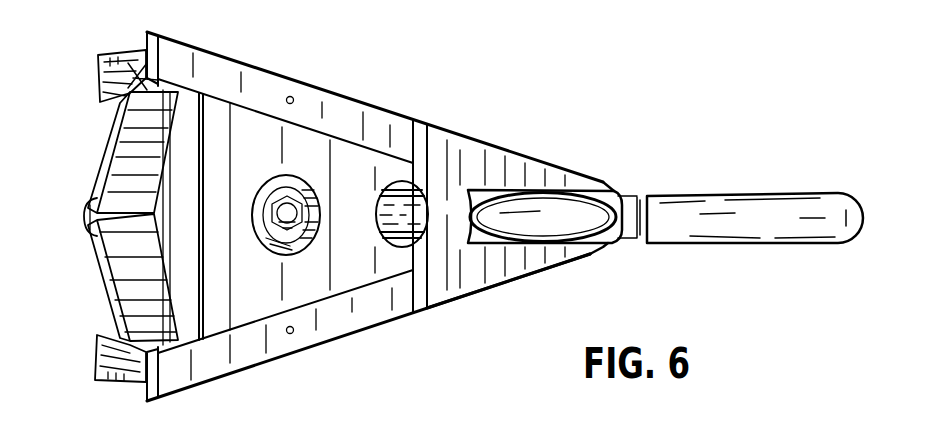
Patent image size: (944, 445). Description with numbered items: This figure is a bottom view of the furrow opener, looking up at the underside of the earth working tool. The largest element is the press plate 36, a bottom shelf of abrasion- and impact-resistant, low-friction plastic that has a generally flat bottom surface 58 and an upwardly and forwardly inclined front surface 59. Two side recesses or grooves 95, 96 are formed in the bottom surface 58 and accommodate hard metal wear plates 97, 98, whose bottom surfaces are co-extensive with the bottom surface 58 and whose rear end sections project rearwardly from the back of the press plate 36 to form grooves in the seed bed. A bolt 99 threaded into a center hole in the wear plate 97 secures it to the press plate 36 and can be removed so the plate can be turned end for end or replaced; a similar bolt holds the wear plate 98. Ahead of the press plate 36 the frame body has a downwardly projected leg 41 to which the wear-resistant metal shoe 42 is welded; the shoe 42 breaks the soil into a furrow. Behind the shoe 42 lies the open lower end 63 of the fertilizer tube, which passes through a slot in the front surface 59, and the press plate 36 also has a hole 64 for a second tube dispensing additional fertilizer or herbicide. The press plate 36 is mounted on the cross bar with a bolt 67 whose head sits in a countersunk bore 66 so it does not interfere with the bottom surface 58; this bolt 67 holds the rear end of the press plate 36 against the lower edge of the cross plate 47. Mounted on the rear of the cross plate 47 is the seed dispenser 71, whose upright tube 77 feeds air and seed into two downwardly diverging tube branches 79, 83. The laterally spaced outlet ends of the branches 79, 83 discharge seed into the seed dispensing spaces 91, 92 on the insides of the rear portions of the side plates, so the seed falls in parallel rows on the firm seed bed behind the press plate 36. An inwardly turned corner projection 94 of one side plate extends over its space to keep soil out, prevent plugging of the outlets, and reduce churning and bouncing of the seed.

The press plate 36 is at (485, 299).
The leg 41 is at (625, 241).
The shoe 42 is at (773, 212).
The cross plate 47 is at (198, 233).
The bottom surface 58 is at (295, 217).
The front surface 59 is at (500, 170).
The open lower end 63 is at (570, 215).
The hole 64 is at (399, 206).
The countersunk bore 66 is at (283, 217).
The bolt 67 is at (298, 237).
The seed dispenser 71 is at (107, 220).
The upright tube 77 is at (86, 221).
The tube branch 79 is at (133, 268).
The tube branch 83 is at (140, 137).
The seed dispensing space 91 is at (138, 373).
The seed dispensing space 92 is at (146, 72).
The corner projection 94 is at (99, 92).
The side groove 95 is at (353, 145).
The side groove 96 is at (257, 313).
The wear plate 97 is at (375, 110).
The wear plate 98 is at (368, 327).
The bolt 99 is at (291, 96).